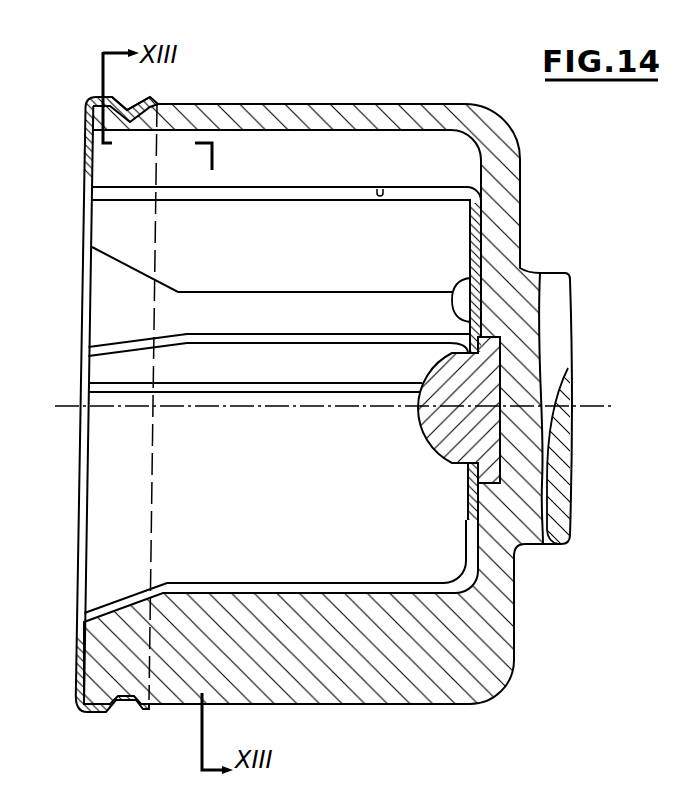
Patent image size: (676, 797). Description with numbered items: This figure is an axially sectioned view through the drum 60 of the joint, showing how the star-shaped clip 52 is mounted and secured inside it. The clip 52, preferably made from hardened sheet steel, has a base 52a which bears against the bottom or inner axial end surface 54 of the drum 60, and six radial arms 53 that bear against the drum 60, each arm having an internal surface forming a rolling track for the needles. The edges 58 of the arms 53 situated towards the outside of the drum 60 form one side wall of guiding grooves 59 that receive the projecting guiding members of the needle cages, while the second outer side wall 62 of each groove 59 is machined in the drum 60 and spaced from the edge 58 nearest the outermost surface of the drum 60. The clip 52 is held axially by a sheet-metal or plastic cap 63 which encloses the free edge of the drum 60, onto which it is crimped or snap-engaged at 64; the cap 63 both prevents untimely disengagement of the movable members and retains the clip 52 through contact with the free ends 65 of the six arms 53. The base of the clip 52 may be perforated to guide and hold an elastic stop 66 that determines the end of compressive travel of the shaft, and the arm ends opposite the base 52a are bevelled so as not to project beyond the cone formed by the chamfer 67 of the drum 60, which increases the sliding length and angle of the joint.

The star-shaped clip 52 is at (466, 224).
The base 52a is at (458, 289).
The radial arm 53 is at (250, 232).
The inner axial end surface 54 is at (473, 250).
The edge 58 is at (430, 200).
The guiding groove 59 is at (320, 197).
The drum 60 is at (410, 641).
The second outer side wall 62 is at (387, 190).
The cap 63 is at (121, 95).
The crimped or snap-engaged location 64 is at (140, 113).
The free ends of the arms 65 is at (84, 215).
The elastic stop 66 is at (133, 269).
The chamfer 67 is at (130, 597).